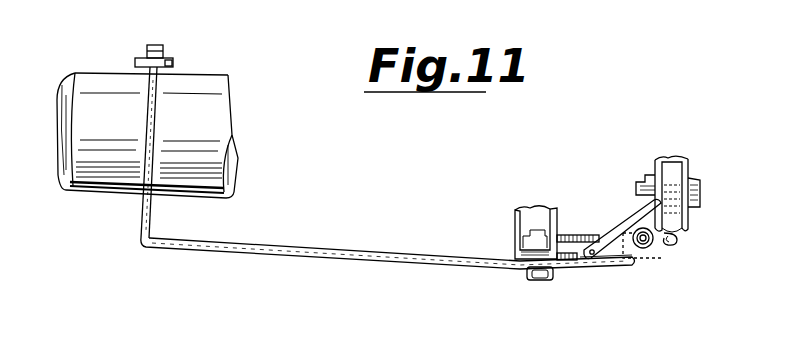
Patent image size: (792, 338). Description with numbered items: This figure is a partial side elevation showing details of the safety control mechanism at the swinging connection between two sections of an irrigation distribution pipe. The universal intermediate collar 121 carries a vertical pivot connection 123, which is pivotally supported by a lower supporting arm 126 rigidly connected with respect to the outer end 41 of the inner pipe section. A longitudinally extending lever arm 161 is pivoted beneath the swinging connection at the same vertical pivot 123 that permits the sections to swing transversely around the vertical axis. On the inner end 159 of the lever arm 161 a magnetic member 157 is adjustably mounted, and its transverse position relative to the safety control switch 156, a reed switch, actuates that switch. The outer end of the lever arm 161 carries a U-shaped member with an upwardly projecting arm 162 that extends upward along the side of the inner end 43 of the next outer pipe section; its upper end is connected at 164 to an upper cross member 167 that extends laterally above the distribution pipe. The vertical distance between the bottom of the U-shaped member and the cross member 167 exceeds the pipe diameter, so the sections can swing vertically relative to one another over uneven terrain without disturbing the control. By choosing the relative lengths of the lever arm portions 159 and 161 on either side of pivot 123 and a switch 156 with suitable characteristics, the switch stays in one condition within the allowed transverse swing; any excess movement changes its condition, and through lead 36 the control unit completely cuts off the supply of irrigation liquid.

The lead 36 is at (655, 205).
The outer end of the inner pipe section 41 is at (694, 183).
The inner end of the next outer section 43 is at (237, 158).
The universal intermediate collar 121 is at (525, 222).
The vertical pivot connection 123 is at (533, 281).
The lower supporting arm 126 is at (600, 246).
The safety control switch 156 is at (676, 241).
The magnetic member 157 is at (653, 247).
The inner end of lever arm 159 is at (598, 268).
The lever arm 161 is at (405, 255).
The upwardly projecting arm 162 is at (155, 125).
The connection 164 is at (147, 56).
The upper cross member 167 is at (170, 60).